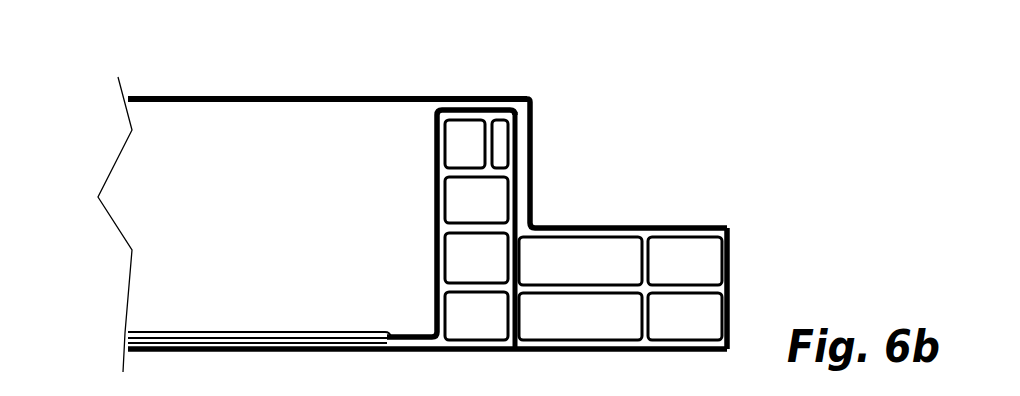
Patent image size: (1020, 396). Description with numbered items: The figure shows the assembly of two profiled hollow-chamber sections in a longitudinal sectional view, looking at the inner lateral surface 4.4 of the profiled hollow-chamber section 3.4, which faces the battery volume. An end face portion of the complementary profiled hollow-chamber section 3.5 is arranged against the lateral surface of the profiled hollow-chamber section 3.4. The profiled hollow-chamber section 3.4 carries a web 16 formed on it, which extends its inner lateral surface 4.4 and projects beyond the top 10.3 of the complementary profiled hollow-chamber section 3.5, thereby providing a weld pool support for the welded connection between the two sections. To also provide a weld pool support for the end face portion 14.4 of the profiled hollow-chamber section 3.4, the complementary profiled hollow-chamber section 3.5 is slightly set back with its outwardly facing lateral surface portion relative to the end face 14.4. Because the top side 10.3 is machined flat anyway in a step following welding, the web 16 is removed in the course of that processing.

The profiled hollow-chamber section 3.4 is at (235, 90).
The top of the profiled hollow-chamber section 10.3 is at (477, 106).
The web 16 is at (536, 97).
The end face portion 14.4 is at (537, 130).
The complementary profiled hollow-chamber section 3.5 is at (620, 205).
The inner lateral surface 4.4 is at (307, 236).